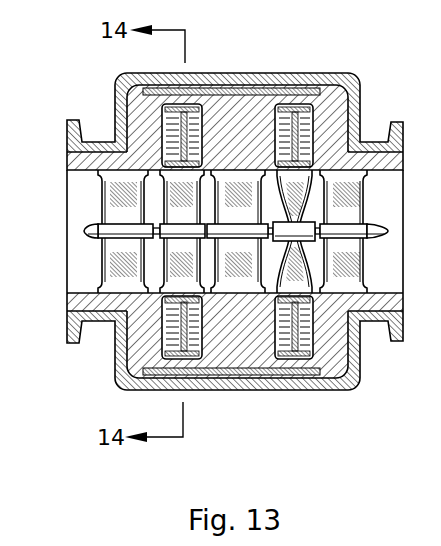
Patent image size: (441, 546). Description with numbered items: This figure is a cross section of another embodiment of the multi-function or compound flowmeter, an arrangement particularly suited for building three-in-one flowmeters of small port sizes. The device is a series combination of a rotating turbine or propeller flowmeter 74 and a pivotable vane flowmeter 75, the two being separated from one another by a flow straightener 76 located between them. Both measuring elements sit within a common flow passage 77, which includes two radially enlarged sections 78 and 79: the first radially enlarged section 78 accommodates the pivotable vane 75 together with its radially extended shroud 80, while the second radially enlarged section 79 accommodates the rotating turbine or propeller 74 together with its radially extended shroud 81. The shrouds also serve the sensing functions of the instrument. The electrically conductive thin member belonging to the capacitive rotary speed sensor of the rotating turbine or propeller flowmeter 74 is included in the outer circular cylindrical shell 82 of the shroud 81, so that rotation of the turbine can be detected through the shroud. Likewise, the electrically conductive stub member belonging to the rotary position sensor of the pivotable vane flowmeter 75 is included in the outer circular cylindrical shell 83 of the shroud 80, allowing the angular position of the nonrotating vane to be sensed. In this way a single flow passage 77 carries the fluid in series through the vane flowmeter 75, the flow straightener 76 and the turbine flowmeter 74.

The rotating turbine or propeller flowmeter 74 is at (358, 362).
The pivotable vane flowmeter 75 is at (175, 265).
The flow straightener 76 is at (242, 178).
The flow passage 77 is at (85, 196).
The radially enlarged section 78 is at (206, 323).
The radially enlarged section 79 is at (322, 332).
The radially extended shroud 80 is at (167, 140).
The radially extended shroud 81 is at (300, 142).
The outer circular cylindrical shell 82 is at (272, 337).
The outer circular cylindrical shell 83 is at (110, 340).